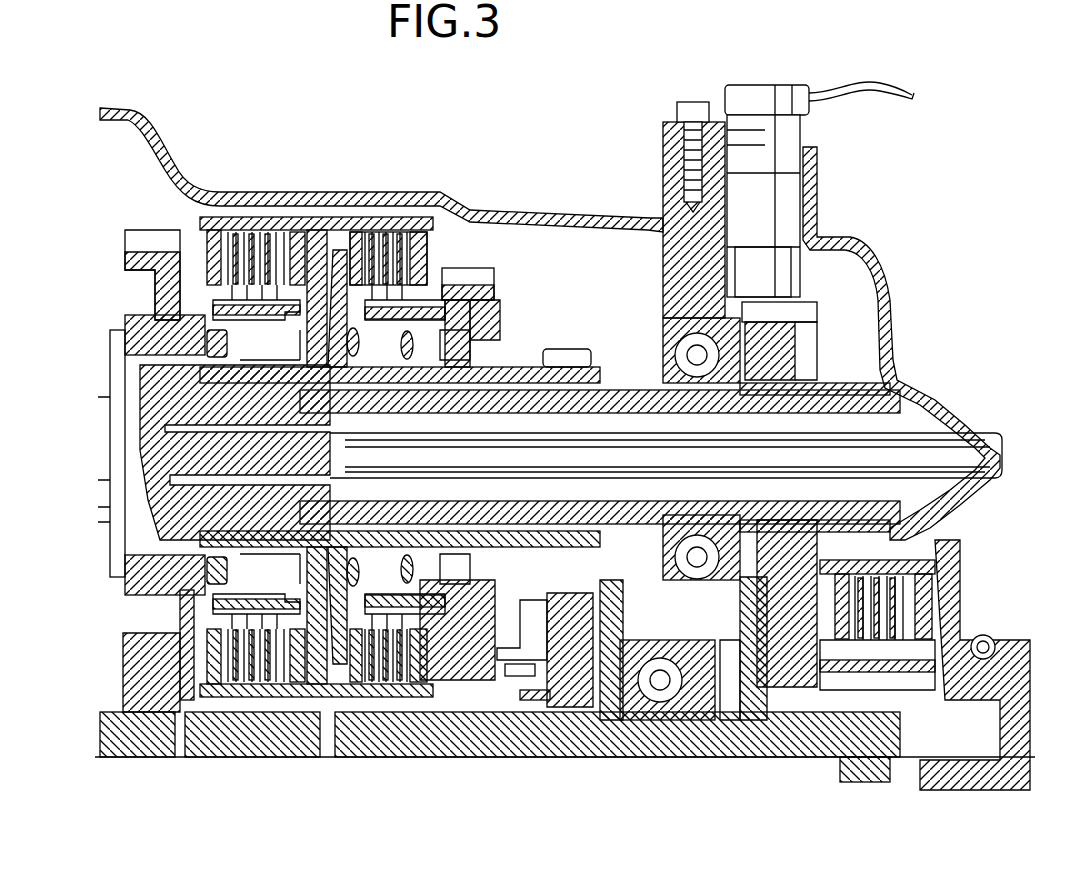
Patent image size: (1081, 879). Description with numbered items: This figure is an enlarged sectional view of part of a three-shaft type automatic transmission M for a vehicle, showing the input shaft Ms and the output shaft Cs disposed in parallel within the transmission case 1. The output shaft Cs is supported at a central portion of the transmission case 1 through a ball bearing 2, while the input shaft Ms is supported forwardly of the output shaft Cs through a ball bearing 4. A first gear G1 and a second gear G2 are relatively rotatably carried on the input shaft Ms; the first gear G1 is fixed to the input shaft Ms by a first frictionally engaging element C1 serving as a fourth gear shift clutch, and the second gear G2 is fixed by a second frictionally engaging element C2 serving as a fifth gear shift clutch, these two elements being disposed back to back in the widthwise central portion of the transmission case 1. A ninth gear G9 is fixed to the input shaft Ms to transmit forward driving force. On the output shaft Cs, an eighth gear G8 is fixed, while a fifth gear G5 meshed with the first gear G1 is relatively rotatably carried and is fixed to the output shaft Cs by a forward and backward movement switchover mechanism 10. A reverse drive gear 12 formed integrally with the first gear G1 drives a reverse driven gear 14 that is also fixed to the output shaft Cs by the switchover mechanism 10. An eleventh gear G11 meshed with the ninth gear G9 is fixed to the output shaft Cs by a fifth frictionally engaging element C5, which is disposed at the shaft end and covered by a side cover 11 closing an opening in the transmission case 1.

The automatic transmission M is at (526, 146).
The transmission case 1 is at (333, 192).
The second frictionally engaging element C2 is at (264, 218).
The first frictionally engaging element C1 is at (394, 218).
The second gear G2 is at (143, 258).
The first gear G1 is at (497, 292).
The reverse drive gear 12 is at (563, 350).
The ball bearing 4 is at (674, 355).
The ninth gear G9 is at (800, 333).
The input shaft Ms is at (125, 372).
The eighth gear G8 is at (671, 557).
The fifth gear G5 is at (497, 648).
The forward and backward movement switchover mechanism 10 is at (516, 664).
The reverse driven gear 14 is at (537, 692).
The ball bearing 2 is at (655, 695).
The eleventh gear G11 is at (758, 702).
The fifth frictionally engaging element C5 is at (950, 545).
The side cover 11 is at (995, 632).
The output shaft Cs is at (120, 718).